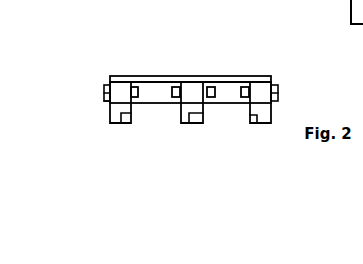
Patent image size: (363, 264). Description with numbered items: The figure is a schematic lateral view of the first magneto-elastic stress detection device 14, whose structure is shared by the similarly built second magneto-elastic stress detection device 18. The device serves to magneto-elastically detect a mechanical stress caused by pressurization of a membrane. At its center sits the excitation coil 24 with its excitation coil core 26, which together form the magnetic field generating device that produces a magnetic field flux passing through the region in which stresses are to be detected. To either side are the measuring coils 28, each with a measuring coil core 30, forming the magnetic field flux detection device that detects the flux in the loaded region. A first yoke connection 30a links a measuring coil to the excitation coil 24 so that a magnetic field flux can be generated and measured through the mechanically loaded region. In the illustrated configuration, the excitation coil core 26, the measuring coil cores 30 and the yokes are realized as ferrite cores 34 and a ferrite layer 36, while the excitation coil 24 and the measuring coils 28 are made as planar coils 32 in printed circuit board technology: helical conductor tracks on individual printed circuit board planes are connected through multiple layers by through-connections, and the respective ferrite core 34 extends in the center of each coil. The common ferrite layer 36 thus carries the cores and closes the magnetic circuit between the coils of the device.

The first magneto-elastic stress detection device 14 is at (199, 120).
The second magneto-elastic stress detection device 18 is at (199, 102).
The excitation coil 24 is at (215, 97).
The excitation coil core 26 is at (190, 125).
The measuring coil 28 is at (103, 83).
The measuring coil core 30 is at (121, 124).
The first yoke connection 30a is at (232, 74).
The planar coil 32 is at (103, 103).
The ferrite core 34 is at (245, 98).
The ferrite layer 36 is at (251, 78).